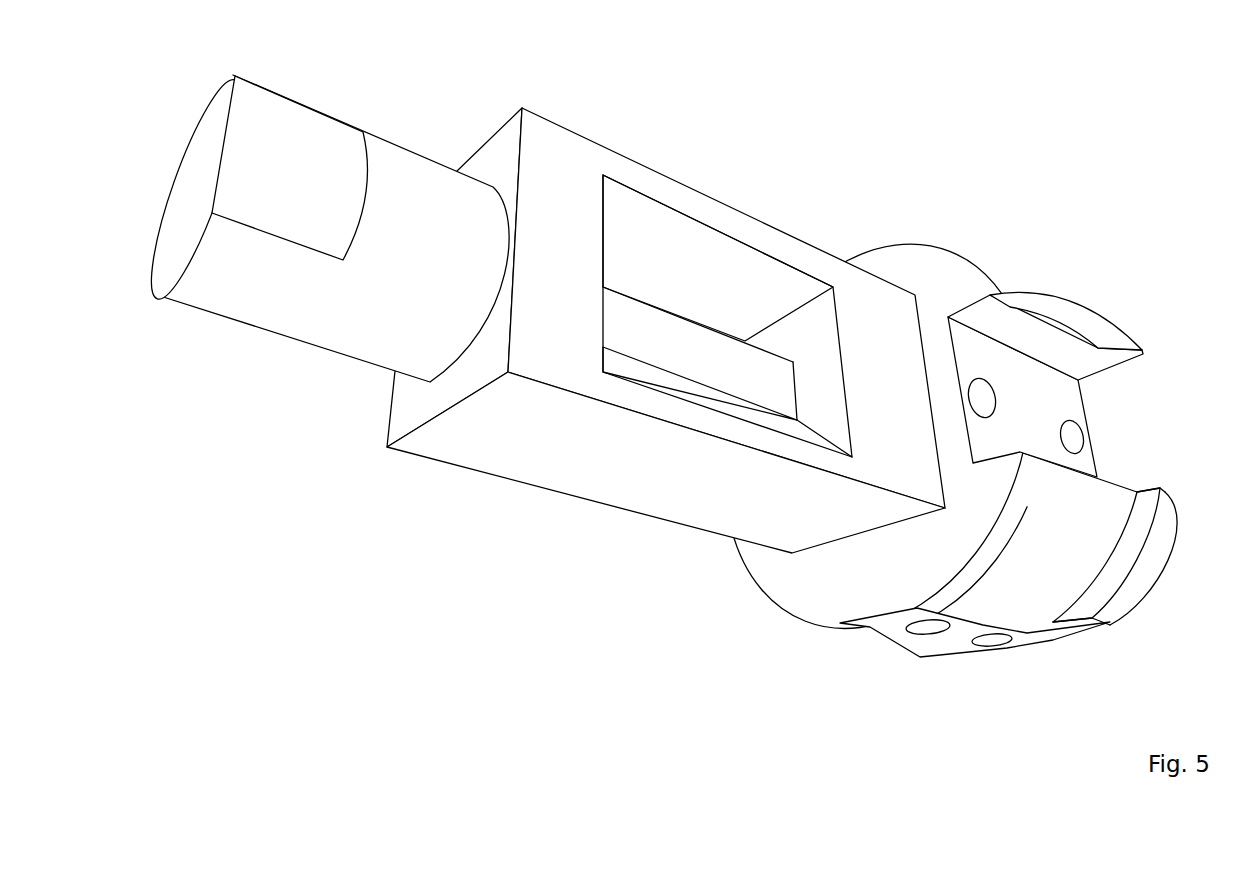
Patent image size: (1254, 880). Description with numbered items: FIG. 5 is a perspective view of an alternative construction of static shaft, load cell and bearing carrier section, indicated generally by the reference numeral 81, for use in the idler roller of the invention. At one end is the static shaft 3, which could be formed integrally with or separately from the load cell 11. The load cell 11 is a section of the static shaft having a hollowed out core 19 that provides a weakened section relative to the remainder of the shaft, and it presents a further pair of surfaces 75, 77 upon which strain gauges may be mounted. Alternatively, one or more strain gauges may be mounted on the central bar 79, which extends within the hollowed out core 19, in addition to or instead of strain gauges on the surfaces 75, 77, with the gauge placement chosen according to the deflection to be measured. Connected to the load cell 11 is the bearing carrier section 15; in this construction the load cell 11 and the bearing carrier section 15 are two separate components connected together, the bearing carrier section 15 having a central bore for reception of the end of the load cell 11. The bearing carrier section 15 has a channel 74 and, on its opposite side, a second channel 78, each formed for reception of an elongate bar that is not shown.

The static shaft 3 is at (307, 133).
The load cell section 11 is at (666, 330).
The bearing carrier section 15 is at (1013, 308).
The hollowed out core 19 is at (739, 314).
The channel 74 is at (1114, 437).
The surface 75 is at (701, 276).
The surface 77 is at (665, 476).
The second channel 78 is at (738, 539).
The central bar 79 is at (701, 356).
The static shaft, load cell and bearing carrier section 81 is at (1133, 117).